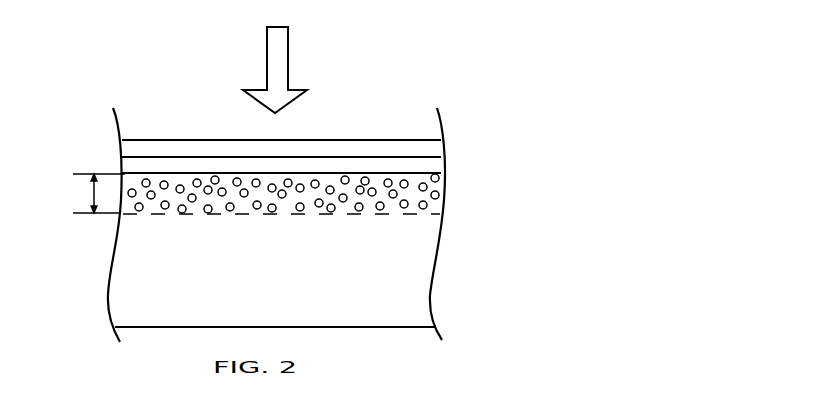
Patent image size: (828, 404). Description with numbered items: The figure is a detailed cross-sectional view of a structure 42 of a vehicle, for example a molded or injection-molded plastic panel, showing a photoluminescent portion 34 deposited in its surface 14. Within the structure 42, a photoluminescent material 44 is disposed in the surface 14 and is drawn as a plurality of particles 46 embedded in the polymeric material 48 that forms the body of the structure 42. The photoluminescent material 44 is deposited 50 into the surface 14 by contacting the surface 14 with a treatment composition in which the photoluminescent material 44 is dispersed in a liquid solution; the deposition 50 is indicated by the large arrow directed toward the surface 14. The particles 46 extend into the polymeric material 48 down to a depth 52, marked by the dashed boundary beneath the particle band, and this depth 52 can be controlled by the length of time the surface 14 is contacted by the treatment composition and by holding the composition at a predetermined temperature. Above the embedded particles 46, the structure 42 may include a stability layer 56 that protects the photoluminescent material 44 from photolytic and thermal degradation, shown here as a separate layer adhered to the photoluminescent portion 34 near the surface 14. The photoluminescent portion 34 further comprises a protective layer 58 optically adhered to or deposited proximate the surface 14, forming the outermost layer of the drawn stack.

The surface 14 is at (358, 178).
The photoluminescent portion 34 is at (146, 114).
The structure 42 is at (406, 57).
The photoluminescent material 44 is at (232, 190).
The particles 46 is at (408, 182).
The polymeric material 48 is at (127, 257).
The deposition 50 is at (278, 48).
The depth 52 is at (394, 207).
The stability layer 56 is at (308, 165).
The protective layer 58 is at (283, 150).